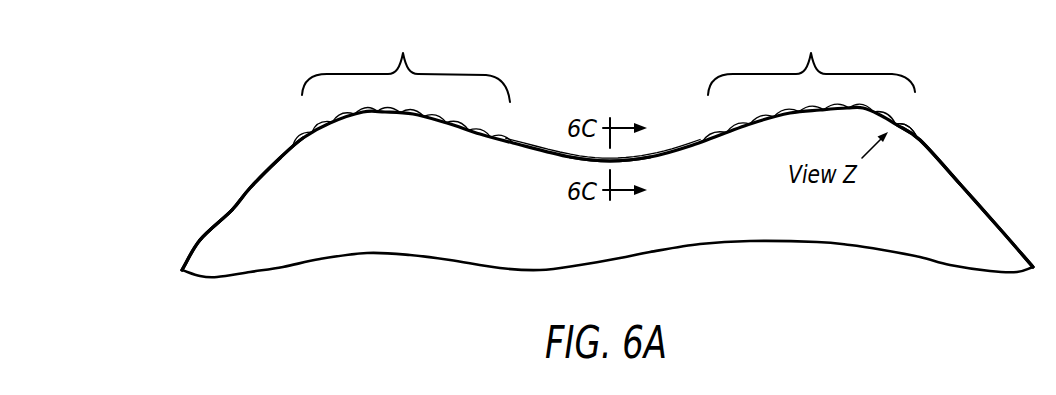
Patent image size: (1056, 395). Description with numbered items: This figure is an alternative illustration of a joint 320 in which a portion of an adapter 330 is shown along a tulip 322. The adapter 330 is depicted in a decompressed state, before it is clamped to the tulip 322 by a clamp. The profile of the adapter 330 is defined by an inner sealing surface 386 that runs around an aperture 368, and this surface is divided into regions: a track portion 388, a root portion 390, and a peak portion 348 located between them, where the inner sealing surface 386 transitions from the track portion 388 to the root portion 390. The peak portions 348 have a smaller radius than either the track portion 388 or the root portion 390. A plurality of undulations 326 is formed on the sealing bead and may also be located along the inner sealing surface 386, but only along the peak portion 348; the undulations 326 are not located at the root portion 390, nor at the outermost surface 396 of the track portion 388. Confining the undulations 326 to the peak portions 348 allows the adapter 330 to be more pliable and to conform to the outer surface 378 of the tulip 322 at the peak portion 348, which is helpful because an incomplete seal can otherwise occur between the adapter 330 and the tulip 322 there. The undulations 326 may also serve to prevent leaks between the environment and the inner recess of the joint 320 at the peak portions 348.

The joint 320 is at (168, 185).
The tulip 322 is at (680, 170).
The undulations 326 is at (875, 107).
The adapter 330 is at (932, 117).
The peak portion 348 is at (608, 63).
The aperture 368 is at (1002, 232).
The outer surface 378 is at (268, 170).
The inner sealing surface 386 is at (910, 138).
The track portion 388 is at (233, 172).
The root portion 390 is at (562, 163).
The outermost surface 396 is at (232, 210).